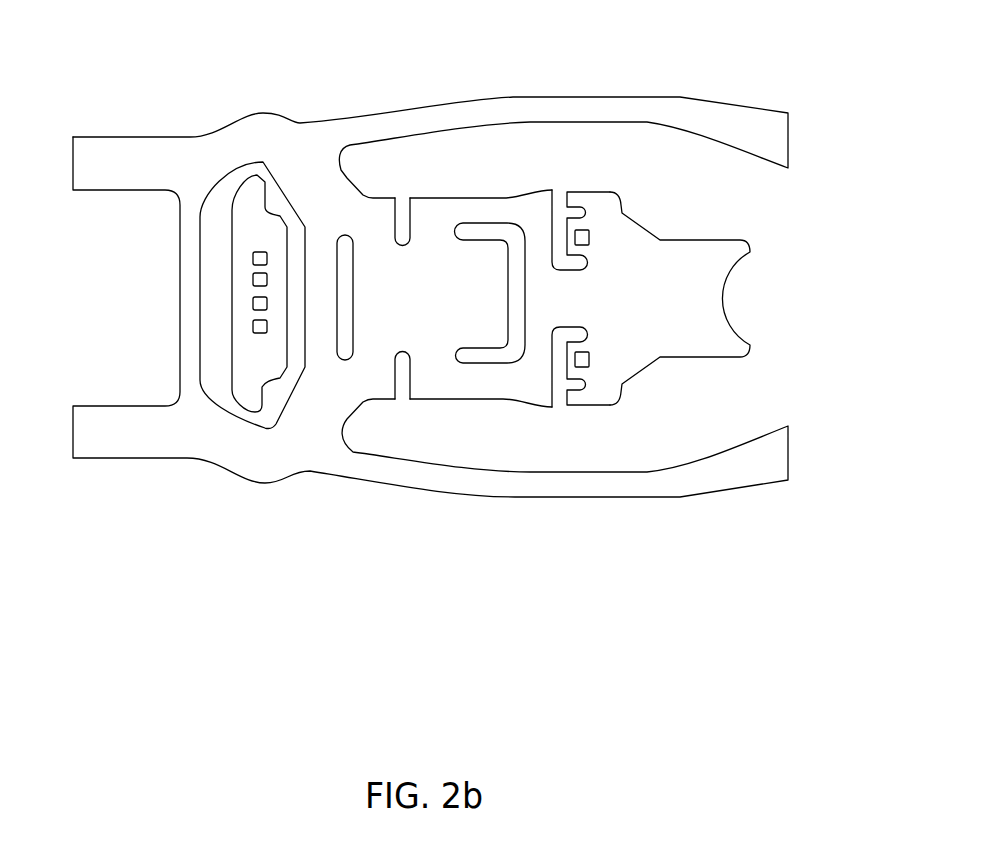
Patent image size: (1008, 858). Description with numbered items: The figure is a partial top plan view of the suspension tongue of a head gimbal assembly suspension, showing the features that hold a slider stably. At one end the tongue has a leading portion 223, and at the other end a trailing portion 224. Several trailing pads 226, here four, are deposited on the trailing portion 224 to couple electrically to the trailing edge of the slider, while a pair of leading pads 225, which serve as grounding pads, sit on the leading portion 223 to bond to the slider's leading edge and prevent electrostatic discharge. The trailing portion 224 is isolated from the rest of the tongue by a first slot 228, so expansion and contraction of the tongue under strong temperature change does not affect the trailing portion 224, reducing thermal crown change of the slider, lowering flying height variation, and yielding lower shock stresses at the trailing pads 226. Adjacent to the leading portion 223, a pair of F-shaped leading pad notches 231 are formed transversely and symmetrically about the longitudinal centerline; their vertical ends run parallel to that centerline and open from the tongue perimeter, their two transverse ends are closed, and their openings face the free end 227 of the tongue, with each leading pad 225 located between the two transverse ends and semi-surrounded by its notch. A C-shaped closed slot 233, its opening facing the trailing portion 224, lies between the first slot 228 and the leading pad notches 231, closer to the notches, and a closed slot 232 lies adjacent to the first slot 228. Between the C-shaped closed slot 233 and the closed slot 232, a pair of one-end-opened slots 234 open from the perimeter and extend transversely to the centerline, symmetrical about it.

The leading portion 223 is at (612, 307).
The trailing portion 224 is at (255, 373).
The leading pads 225 is at (580, 232).
The trailing pads 226 is at (253, 328).
The free end 227 is at (752, 302).
The first slot 228 is at (273, 392).
The F-shaped leading pad notches 231 is at (557, 198).
The closed slot 232 is at (347, 340).
The C-shaped closed slot 233 is at (490, 355).
The one-end-opened slots 234 is at (403, 207).